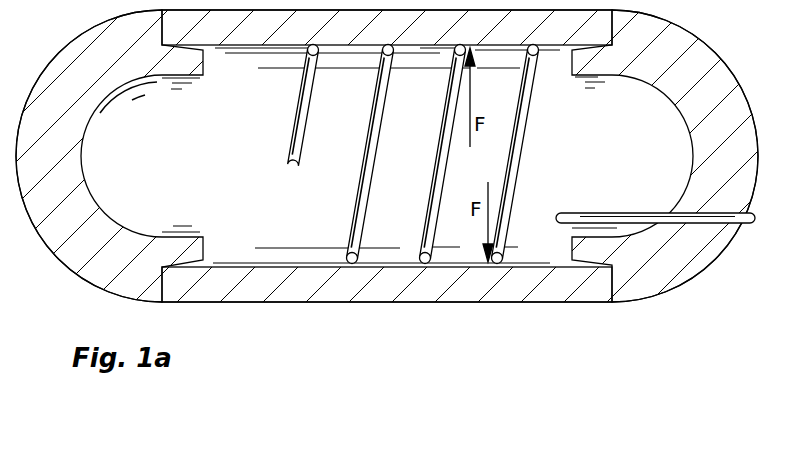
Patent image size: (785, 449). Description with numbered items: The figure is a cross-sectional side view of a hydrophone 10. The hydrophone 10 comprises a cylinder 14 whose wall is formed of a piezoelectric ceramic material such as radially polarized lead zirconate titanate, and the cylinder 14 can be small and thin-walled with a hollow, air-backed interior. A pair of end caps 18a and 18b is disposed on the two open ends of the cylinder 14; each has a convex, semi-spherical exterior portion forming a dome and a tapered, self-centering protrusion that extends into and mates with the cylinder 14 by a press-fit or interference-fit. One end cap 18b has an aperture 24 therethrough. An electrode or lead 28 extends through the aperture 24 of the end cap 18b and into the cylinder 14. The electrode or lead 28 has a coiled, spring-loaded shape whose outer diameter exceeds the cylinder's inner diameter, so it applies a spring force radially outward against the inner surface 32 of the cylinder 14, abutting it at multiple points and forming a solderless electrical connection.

The hydrophone 10 is at (281, 338).
The cylinder 14 is at (535, 292).
The end cap 18a is at (53, 233).
The end cap 18b is at (692, 262).
The aperture 24 is at (712, 227).
The electrode or lead 28 is at (367, 212).
The inner surface 32 is at (323, 233).